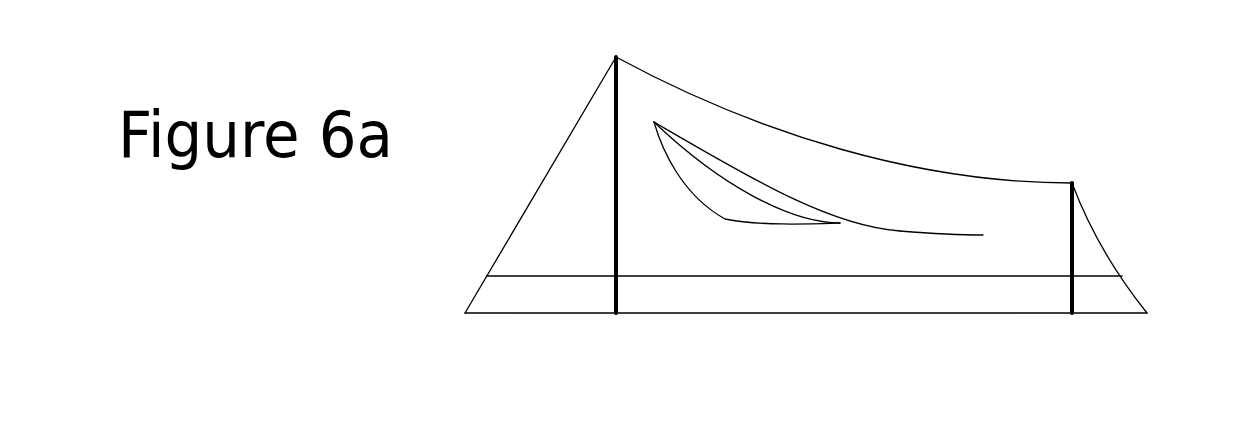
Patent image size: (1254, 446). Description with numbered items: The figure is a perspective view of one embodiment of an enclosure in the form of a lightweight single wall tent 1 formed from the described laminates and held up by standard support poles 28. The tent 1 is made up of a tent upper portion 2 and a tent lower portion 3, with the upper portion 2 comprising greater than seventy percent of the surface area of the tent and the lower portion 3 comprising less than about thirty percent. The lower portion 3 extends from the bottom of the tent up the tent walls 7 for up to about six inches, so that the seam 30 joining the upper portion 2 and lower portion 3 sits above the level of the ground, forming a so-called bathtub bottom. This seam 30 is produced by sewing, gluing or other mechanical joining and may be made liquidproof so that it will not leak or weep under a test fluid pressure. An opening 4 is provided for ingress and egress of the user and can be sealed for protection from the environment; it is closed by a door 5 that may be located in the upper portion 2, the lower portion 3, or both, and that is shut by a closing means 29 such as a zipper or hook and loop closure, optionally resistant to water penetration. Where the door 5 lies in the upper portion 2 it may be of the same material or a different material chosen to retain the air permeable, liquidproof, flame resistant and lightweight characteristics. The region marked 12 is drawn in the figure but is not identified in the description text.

The single wall tent 1 is at (563, 143).
The tent upper portion 2 is at (1082, 235).
The tent lower portion 3 is at (1108, 287).
The opening 4 is at (743, 185).
The door 5 is at (705, 197).
The tent walls 7 is at (1033, 208).
The space between fly and inner compartment 12 is at (868, 198).
The support poles 28 is at (613, 203).
The closing means 29 is at (920, 235).
The seam 30 is at (487, 277).